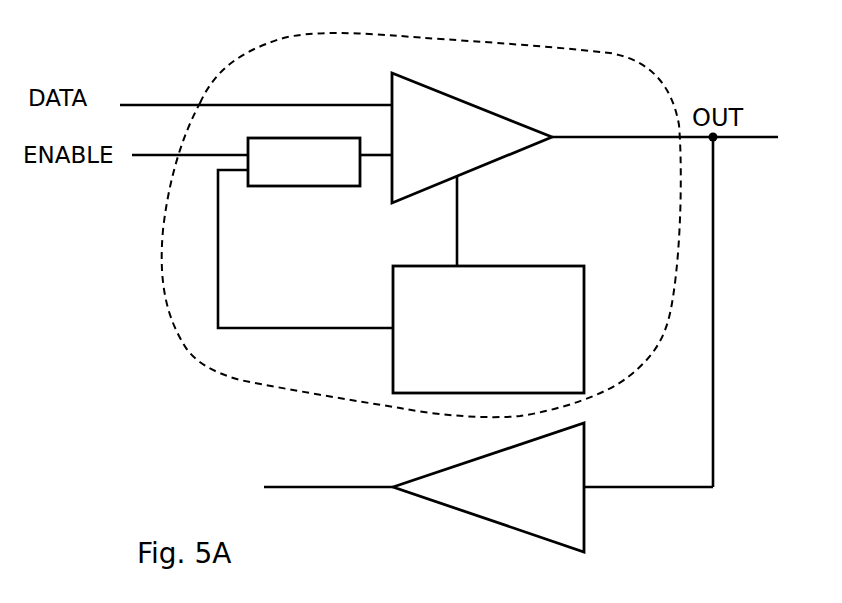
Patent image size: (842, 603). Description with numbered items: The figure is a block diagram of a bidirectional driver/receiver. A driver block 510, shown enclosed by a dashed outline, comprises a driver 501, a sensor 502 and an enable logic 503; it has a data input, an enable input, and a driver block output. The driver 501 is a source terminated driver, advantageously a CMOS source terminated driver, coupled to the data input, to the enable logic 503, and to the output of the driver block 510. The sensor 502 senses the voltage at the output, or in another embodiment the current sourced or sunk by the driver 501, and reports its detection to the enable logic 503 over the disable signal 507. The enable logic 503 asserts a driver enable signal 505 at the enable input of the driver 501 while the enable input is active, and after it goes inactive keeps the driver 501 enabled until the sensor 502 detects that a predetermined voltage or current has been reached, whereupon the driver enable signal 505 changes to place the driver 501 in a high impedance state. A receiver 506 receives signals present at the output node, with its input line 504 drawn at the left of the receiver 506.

The driver 501 is at (475, 102).
The sensor 502 is at (520, 266).
The enable logic 503 is at (265, 186).
The receiver input line 504 is at (363, 483).
The driver enable signal 505 is at (377, 156).
The receiver 506 is at (473, 517).
The disable signal 507 is at (248, 328).
The driver block 510 is at (200, 360).